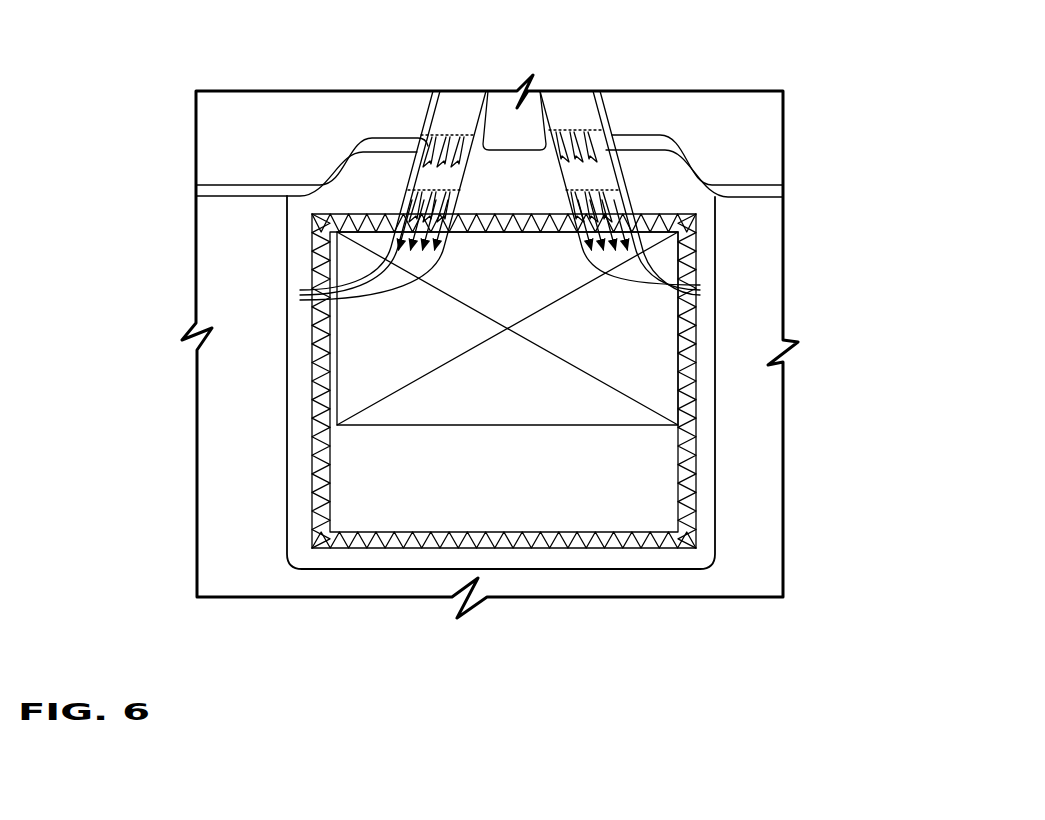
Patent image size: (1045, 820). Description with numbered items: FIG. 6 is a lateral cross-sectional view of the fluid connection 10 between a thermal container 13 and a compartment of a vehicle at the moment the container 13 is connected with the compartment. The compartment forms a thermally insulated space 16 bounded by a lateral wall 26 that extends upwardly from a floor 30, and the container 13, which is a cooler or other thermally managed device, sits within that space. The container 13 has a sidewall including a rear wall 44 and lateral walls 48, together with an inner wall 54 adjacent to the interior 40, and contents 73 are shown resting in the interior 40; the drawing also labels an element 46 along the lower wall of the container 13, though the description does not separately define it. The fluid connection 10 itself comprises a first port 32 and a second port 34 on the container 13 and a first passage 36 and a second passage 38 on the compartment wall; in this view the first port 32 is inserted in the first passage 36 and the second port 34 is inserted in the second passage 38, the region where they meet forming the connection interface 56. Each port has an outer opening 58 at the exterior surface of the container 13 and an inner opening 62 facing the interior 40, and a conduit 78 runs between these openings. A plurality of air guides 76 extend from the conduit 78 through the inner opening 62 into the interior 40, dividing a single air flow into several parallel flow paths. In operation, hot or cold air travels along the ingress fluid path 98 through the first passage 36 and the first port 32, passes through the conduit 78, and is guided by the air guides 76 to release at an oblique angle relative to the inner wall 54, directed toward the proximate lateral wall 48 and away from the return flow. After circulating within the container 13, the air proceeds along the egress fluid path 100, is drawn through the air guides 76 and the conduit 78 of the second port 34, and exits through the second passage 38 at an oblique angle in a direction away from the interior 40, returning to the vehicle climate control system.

The fluid connection 10 is at (683, 124).
The thermal container 13 is at (280, 471).
The thermally insulated space 16 is at (253, 440).
The lateral wall 26 is at (222, 197).
The floor 30 is at (233, 546).
The first port 32 is at (403, 200).
The second port 34 is at (678, 195).
The first passage 36 is at (444, 117).
The second passage 38 is at (551, 109).
The interior 40 is at (522, 496).
The rear wall 44 is at (634, 175).
The insulation frame 46 is at (568, 558).
The lateral wall 48 is at (287, 372).
The inner wall 54 is at (649, 555).
The connection interface 56 is at (416, 133).
The outer opening 58 is at (408, 137).
The inner opening 62 is at (401, 177).
The contents 73 is at (522, 399).
The air guides 76 is at (300, 293).
The conduit 78 is at (612, 152).
The ingress fluid path 98 is at (459, 121).
The egress fluid path 100 is at (568, 98).